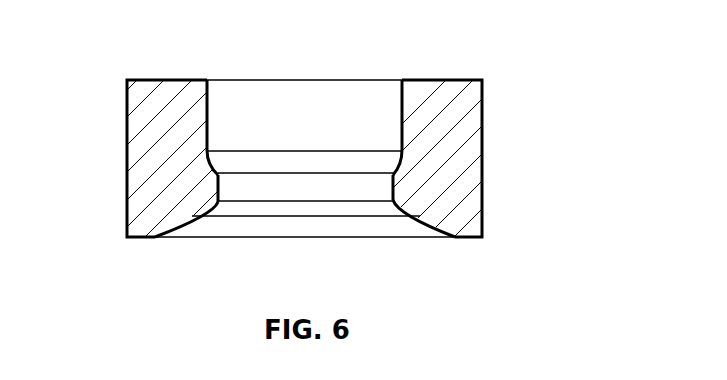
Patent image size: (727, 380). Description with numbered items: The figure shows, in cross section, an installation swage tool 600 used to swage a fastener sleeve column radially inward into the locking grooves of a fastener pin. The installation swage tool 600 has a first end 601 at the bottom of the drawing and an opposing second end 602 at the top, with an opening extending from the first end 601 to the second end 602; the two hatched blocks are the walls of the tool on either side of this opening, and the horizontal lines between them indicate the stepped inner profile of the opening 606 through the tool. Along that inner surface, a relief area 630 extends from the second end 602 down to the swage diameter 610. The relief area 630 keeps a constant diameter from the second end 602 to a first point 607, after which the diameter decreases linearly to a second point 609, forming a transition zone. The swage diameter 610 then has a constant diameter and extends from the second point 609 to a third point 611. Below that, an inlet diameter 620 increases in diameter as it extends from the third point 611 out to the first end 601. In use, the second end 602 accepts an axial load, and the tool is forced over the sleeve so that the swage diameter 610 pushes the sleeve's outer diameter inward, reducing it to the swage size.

The installation swage tool 600 is at (526, 92).
The first end 601 is at (137, 240).
The second end 602 is at (443, 80).
The channel / recess between portions 606 is at (304, 109).
The first point 607 is at (400, 150).
The second point 609 is at (395, 173).
The swage diameter 610 is at (216, 187).
The third point 611 is at (218, 204).
The inlet diameter 620 is at (434, 226).
The relief area 630 is at (208, 108).